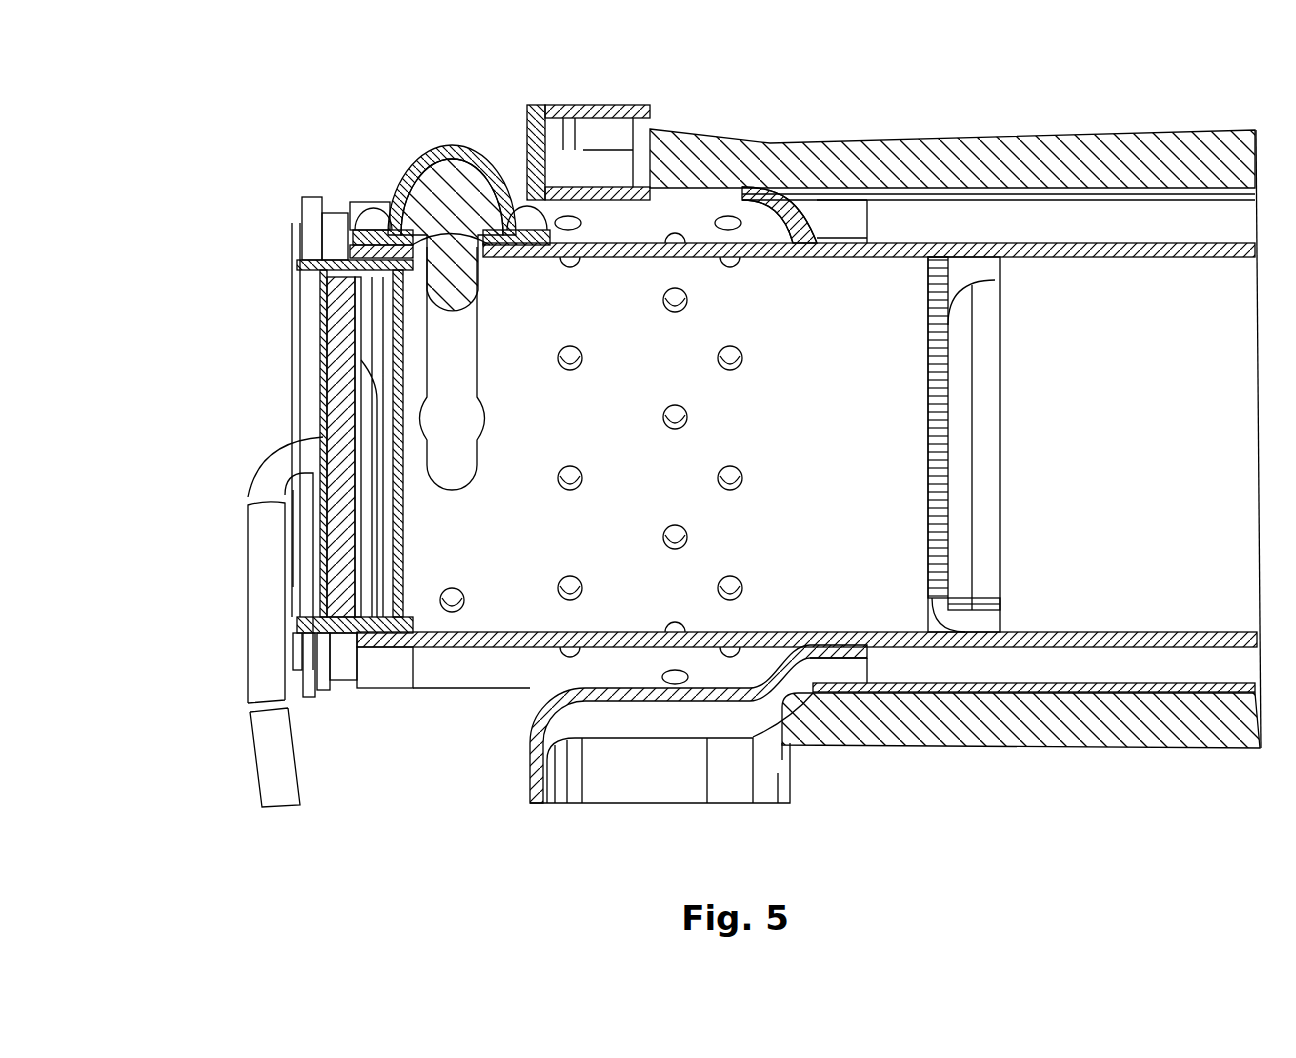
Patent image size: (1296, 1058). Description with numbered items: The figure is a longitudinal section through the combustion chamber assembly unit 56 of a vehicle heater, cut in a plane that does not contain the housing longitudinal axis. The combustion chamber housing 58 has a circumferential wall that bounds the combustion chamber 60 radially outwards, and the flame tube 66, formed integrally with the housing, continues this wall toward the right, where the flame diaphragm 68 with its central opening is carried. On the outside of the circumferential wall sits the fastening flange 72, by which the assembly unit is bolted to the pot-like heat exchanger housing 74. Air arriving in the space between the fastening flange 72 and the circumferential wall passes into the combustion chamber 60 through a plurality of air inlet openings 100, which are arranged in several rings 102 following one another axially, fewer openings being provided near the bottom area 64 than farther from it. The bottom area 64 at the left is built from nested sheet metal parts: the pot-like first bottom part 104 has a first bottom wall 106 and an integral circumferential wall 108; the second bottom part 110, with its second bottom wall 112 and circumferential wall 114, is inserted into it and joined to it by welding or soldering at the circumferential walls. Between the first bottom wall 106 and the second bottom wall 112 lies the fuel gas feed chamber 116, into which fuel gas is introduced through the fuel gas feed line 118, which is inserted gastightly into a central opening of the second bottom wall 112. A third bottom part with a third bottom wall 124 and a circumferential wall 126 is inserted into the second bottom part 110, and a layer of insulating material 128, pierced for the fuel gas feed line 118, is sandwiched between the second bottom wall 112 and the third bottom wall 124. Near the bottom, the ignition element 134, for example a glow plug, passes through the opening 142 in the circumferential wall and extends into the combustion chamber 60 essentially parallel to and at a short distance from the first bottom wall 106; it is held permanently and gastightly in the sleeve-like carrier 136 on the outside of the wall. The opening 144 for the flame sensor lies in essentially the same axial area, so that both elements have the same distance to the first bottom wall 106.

The combustion chamber assembly unit 56 is at (849, 126).
The combustion chamber housing 58 is at (626, 680).
The combustion chamber 60 is at (878, 285).
The bottom area 64 is at (232, 376).
The flame tube 66 is at (1193, 628).
The flame diaphragm 68 is at (960, 325).
The fastening flange 72 is at (667, 723).
The heat exchanger housing 74 is at (1080, 730).
The air inlet openings 100 is at (560, 598).
The rings 102 is at (746, 676).
The first bottom part 104 is at (415, 650).
The first bottom wall 106 is at (397, 327).
The circumferential wall 108 is at (331, 257).
The second bottom part 110 is at (340, 690).
The second bottom wall 112 is at (357, 557).
The circumferential wall 114 is at (293, 263).
The fuel gas feed chamber 116 is at (372, 690).
The fuel gas feed line 118 is at (248, 618).
The third bottom wall 124 is at (320, 398).
The circumferential wall 126 is at (297, 277).
The layer of insulating material 128 is at (337, 360).
The ignition element 134 is at (455, 250).
The sleeve-like carrier 136 is at (416, 165).
The opening 142 is at (497, 228).
The opening 144 is at (418, 422).